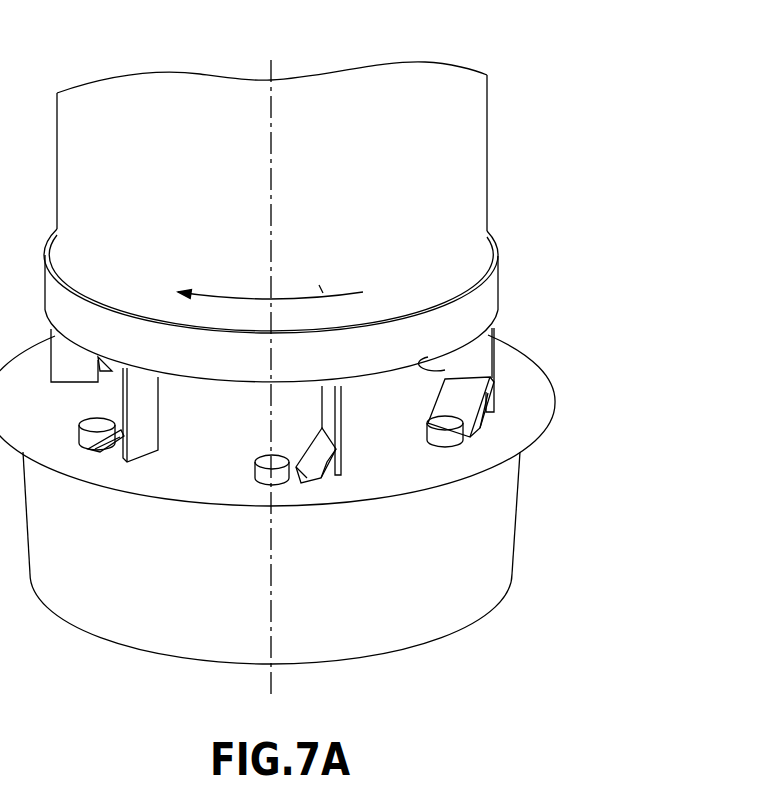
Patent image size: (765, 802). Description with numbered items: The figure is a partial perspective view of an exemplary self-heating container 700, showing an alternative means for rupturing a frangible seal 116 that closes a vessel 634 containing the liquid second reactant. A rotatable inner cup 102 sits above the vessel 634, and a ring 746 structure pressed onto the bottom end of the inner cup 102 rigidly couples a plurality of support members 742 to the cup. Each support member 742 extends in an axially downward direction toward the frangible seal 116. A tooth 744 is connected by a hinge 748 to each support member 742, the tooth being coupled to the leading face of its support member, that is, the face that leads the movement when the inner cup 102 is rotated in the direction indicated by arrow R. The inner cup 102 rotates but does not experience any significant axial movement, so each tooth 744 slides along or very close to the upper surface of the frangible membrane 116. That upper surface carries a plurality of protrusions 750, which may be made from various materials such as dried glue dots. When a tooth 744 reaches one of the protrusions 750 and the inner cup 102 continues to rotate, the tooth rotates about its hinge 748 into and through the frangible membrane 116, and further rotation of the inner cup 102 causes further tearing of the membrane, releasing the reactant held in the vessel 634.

The self-heating container 700 is at (585, 107).
The inner cup 102 is at (490, 182).
The ring 746 is at (500, 273).
The frangible seal 116 is at (520, 405).
The vessel 634 is at (133, 605).
The hinge 748 is at (342, 448).
The support member 742 is at (343, 477).
The tooth 744 is at (313, 478).
The protrusion 750 is at (266, 481).